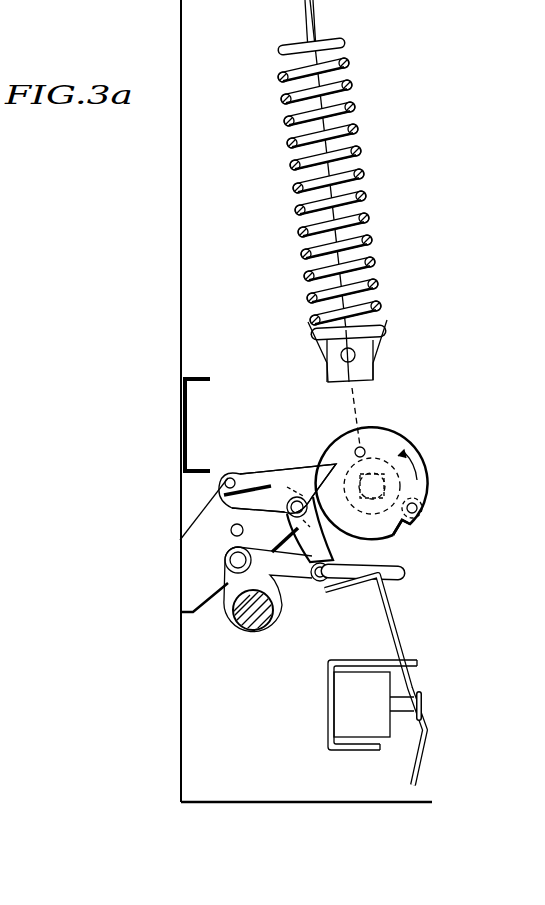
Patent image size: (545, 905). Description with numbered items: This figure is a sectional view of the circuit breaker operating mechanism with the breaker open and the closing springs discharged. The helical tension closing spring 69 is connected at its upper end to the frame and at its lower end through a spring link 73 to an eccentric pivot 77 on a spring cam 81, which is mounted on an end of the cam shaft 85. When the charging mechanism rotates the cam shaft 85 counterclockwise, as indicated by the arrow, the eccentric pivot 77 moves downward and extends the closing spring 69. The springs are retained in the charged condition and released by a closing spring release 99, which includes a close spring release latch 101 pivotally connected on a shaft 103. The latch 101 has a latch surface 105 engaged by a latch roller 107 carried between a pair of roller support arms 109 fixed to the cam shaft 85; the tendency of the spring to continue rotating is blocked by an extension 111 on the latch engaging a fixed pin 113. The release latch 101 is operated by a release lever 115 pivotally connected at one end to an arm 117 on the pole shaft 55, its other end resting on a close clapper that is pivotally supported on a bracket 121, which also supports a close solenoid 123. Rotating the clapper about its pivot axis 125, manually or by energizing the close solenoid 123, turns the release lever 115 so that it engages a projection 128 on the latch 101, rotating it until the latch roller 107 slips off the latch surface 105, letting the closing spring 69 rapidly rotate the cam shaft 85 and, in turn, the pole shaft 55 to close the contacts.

The closing spring 69 is at (362, 215).
The spring link 73 is at (332, 372).
The eccentric pivot 77 is at (364, 447).
The spring cam 81 is at (430, 471).
The cam shaft 85 is at (402, 437).
The latch roller 107 is at (423, 505).
The roller support arms 109 is at (392, 532).
The fixed pin 113 is at (220, 483).
The extension 111 is at (236, 506).
The shaft 103 is at (265, 480).
The close spring release latch 101 is at (303, 482).
The latch surface 105 is at (333, 463).
The closing spring release 99 is at (208, 537).
The arm 117 is at (230, 583).
The pole shaft 55 is at (243, 628).
The projection 128 is at (296, 578).
The release lever 115 is at (400, 568).
The pivot axis 125 is at (405, 660).
The bracket 121 is at (340, 755).
The close solenoid 123 is at (340, 708).